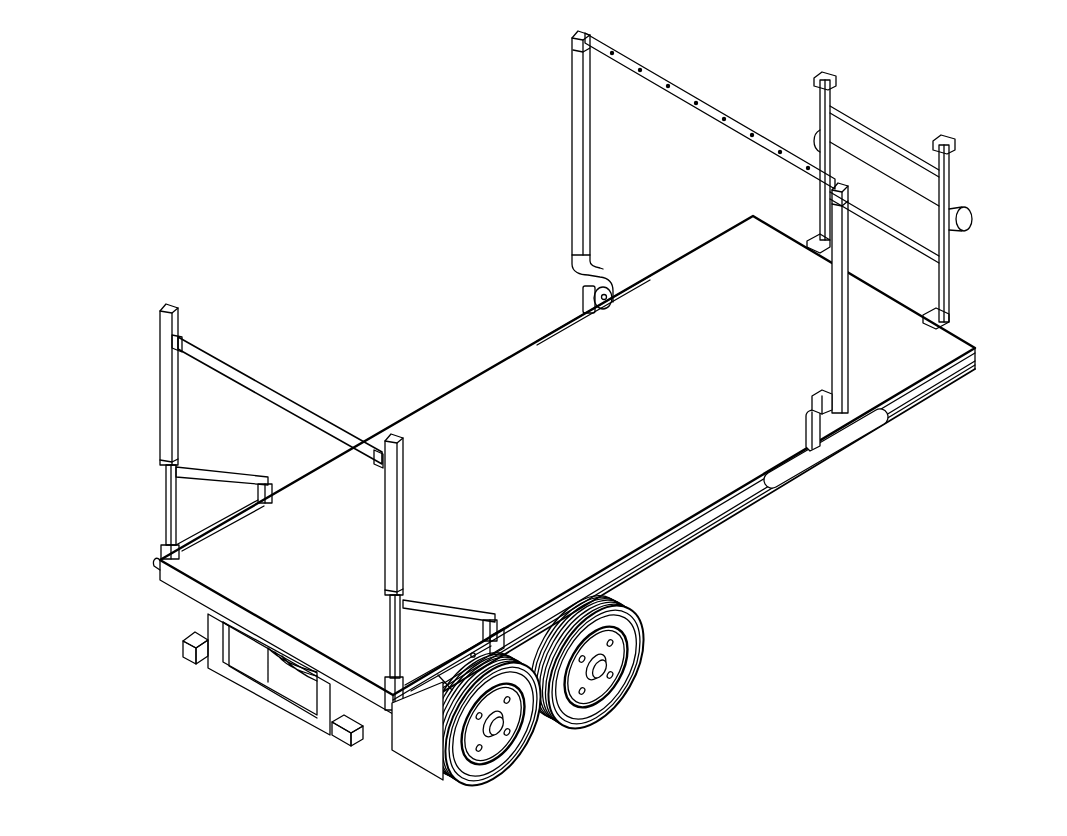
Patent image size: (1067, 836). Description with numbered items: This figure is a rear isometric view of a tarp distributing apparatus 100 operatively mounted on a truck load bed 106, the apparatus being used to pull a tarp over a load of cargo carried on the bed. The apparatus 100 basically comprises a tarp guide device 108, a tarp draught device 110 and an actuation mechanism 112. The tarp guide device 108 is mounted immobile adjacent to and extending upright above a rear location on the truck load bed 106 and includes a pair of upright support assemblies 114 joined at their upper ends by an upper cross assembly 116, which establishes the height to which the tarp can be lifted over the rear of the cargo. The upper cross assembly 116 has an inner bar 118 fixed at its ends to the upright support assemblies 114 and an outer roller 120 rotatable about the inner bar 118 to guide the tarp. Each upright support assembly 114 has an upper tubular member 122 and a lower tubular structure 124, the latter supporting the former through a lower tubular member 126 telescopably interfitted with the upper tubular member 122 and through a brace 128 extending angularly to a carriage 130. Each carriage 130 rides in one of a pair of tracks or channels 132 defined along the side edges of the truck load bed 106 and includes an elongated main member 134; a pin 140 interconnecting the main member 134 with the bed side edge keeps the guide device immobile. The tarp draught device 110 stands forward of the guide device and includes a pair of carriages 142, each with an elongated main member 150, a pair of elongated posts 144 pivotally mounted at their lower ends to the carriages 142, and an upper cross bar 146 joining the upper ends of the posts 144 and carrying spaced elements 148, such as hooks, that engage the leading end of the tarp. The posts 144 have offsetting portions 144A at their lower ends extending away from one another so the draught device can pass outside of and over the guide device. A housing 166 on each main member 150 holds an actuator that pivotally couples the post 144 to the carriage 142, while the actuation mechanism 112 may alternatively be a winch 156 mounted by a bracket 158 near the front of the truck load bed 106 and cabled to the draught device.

The tarp distributing apparatus 100 is at (241, 177).
The truck load bed 106 is at (672, 447).
The tarp guide device 108 is at (140, 306).
The tarp draught device 110 is at (640, 42).
The actuation mechanism 112 is at (980, 170).
The upright support assembly 114 is at (208, 450).
The upper cross assembly 116 is at (350, 418).
The inner bar 118 is at (188, 333).
The outer roller 120 is at (280, 393).
The upper tubular member 122 is at (155, 380).
The lower tubular structure 124 is at (152, 525).
The lower tubular member 126 is at (163, 488).
The brace 128 is at (244, 476).
The carriage 130 is at (145, 575).
The track or channel 132 is at (692, 545).
The elongated main member 134 is at (500, 722).
The pin 140 is at (505, 635).
The carriage 142 is at (540, 318).
The elongated post 144 is at (576, 96).
The offsetting portion 144A is at (592, 258).
The upper cross bar 146 is at (708, 100).
The element 148 is at (658, 72).
The elongated main member 150 is at (624, 278).
The winch 156 is at (868, 150).
The bracket 158 is at (955, 263).
The housing 166 is at (578, 283).